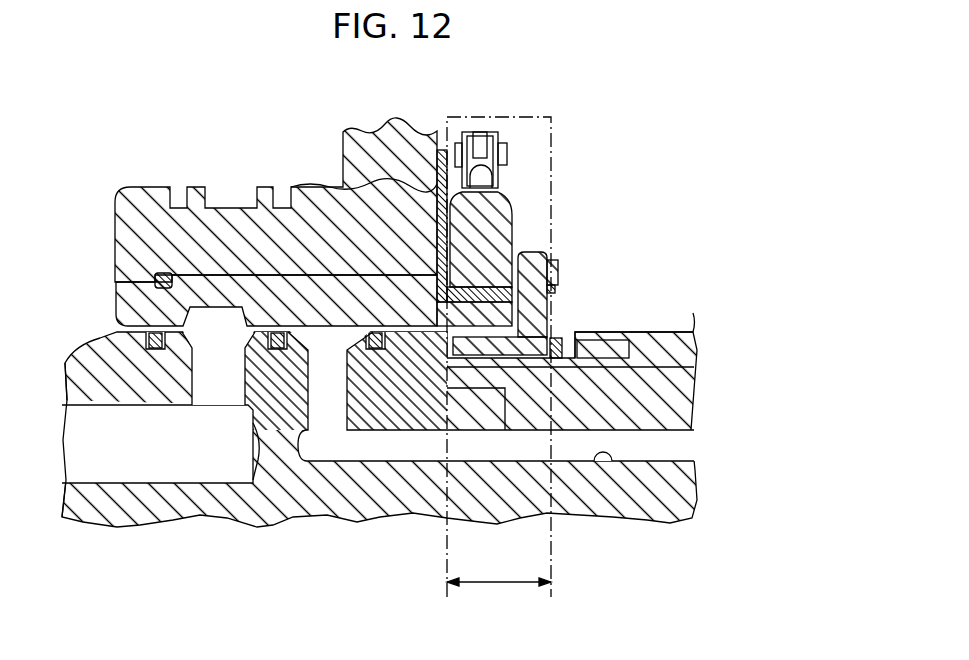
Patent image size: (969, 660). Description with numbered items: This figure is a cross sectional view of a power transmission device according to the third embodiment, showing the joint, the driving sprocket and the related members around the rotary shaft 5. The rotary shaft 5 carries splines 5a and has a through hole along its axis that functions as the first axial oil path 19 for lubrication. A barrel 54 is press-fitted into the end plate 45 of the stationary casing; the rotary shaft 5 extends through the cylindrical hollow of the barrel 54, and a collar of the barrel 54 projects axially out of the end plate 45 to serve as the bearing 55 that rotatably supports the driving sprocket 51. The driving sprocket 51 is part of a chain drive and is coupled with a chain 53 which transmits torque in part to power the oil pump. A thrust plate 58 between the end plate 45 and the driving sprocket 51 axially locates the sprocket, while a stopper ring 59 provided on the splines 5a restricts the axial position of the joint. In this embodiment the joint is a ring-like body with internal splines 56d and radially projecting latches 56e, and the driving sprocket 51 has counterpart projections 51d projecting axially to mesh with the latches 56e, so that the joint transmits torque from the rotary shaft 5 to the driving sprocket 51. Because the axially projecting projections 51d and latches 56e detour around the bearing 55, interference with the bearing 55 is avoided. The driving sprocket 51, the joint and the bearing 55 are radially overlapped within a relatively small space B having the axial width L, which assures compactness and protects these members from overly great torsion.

The rotary shaft 5 is at (657, 512).
The splines 5a is at (575, 333).
The first axial oil path 19 is at (607, 466).
The end plate 45 is at (215, 225).
The barrel 54 is at (243, 268).
The thrust plate 58 is at (437, 154).
The chain 53 is at (452, 205).
The driving sprocket 51 is at (515, 198).
The bearing 55 is at (535, 252).
The radially projecting latches 56e is at (549, 262).
The counterpart projections 51d is at (553, 259).
The stopper ring 59 is at (562, 348).
The internal splines 56d is at (507, 432).
The space B is at (552, 112).
The axial width L is at (499, 597).